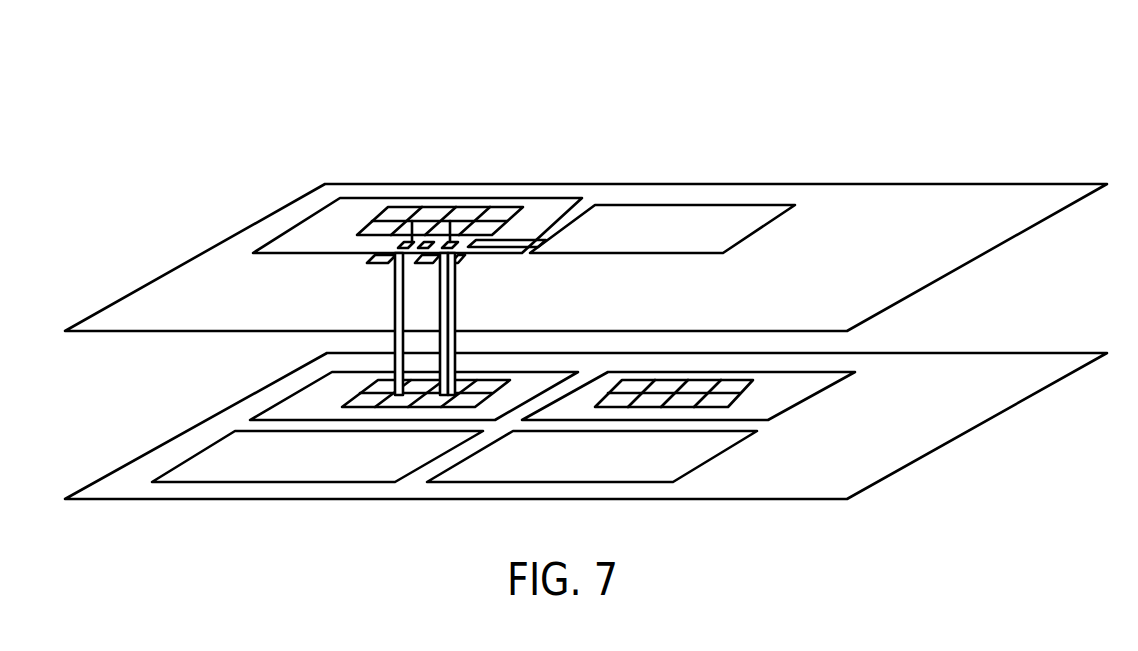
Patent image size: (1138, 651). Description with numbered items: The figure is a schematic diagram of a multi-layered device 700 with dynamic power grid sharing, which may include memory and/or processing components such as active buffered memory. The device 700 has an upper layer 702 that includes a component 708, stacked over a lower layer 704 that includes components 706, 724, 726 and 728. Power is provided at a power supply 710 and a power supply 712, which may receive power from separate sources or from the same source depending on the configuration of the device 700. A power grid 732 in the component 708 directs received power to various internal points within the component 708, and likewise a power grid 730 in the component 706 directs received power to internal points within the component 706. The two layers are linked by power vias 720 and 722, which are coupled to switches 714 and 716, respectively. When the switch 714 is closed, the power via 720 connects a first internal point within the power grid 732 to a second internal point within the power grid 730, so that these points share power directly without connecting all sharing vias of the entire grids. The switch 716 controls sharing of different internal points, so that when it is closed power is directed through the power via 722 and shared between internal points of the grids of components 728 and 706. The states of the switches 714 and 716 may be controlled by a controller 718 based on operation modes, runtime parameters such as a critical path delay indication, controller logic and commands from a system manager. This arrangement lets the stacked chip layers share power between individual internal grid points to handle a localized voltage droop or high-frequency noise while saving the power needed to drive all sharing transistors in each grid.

The device 700 is at (757, 85).
The layer 702 is at (985, 252).
The layer 704 is at (973, 428).
The component 706 is at (296, 392).
The component 708 is at (324, 215).
The power supply 710 is at (382, 258).
The power supply 712 is at (433, 257).
The switch 714 is at (413, 243).
The switch 716 is at (466, 241).
The controller 718 is at (758, 230).
The power via 720 is at (395, 318).
The power via 722 is at (455, 325).
The component 724 is at (200, 453).
The component 726 is at (721, 453).
The component 728 is at (810, 397).
The power grid 730 is at (356, 393).
The power grid 732 is at (372, 220).